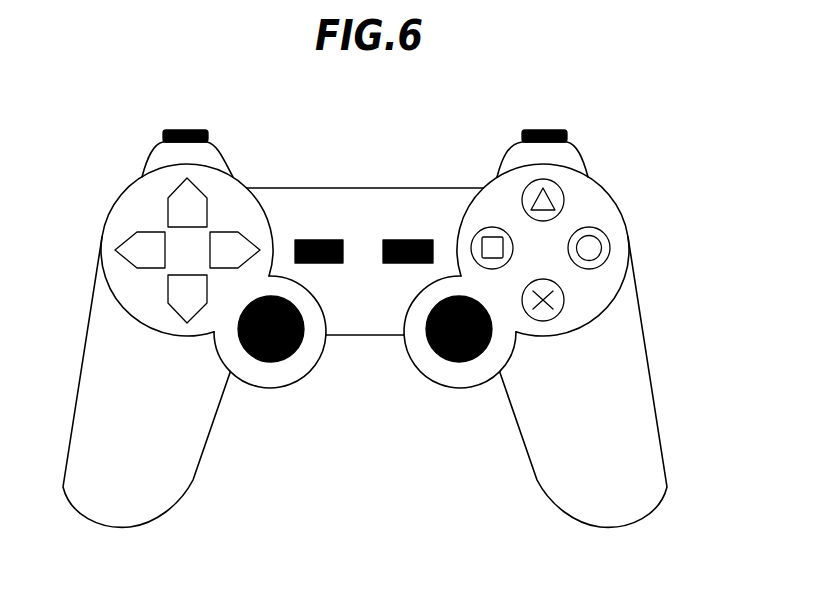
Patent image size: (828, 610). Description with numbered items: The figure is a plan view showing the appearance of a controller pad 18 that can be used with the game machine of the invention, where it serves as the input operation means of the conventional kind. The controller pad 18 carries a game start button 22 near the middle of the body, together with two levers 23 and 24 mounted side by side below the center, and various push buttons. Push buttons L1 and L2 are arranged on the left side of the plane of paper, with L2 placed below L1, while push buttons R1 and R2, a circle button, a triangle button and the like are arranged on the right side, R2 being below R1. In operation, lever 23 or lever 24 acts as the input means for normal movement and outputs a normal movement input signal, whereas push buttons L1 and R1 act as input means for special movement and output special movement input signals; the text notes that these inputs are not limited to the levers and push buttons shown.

The controller pad 18 is at (622, 169).
The game start button 22 is at (402, 240).
The lever 23 is at (270, 361).
The lever 24 is at (450, 361).